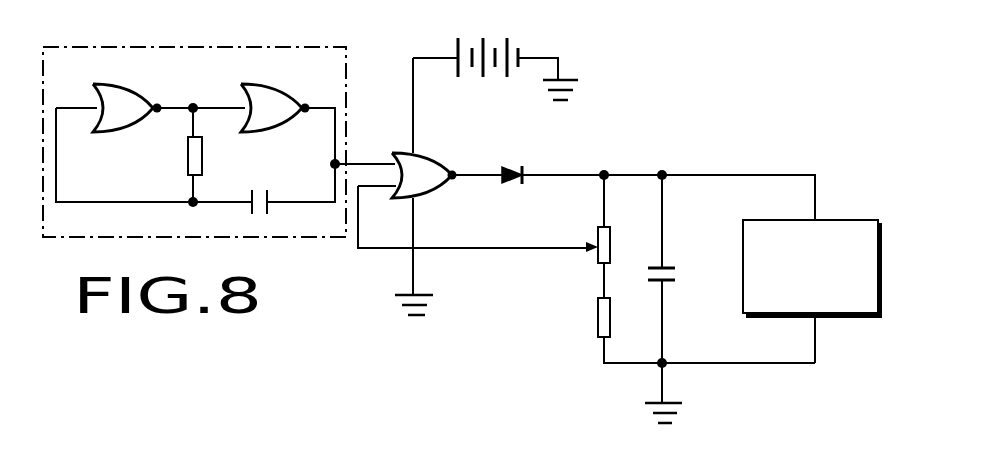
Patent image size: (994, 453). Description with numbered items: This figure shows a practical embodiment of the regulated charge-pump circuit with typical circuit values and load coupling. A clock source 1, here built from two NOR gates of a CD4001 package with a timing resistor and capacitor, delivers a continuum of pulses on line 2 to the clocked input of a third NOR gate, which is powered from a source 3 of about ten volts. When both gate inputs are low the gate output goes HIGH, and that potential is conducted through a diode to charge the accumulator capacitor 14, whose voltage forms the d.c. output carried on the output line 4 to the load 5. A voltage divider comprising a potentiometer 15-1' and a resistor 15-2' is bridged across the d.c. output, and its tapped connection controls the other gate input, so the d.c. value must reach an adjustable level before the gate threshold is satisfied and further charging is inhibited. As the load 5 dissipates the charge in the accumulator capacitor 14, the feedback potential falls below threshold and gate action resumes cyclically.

The clock source 1 is at (321, 60).
The line 2 is at (368, 163).
The source 3 is at (503, 79).
The DC output line 4 is at (816, 194).
The load 5 is at (864, 235).
The accumulator capacitor 14 is at (673, 274).
The potentiometer 15-1' is at (552, 236).
The resistor 15-2' is at (671, 330).